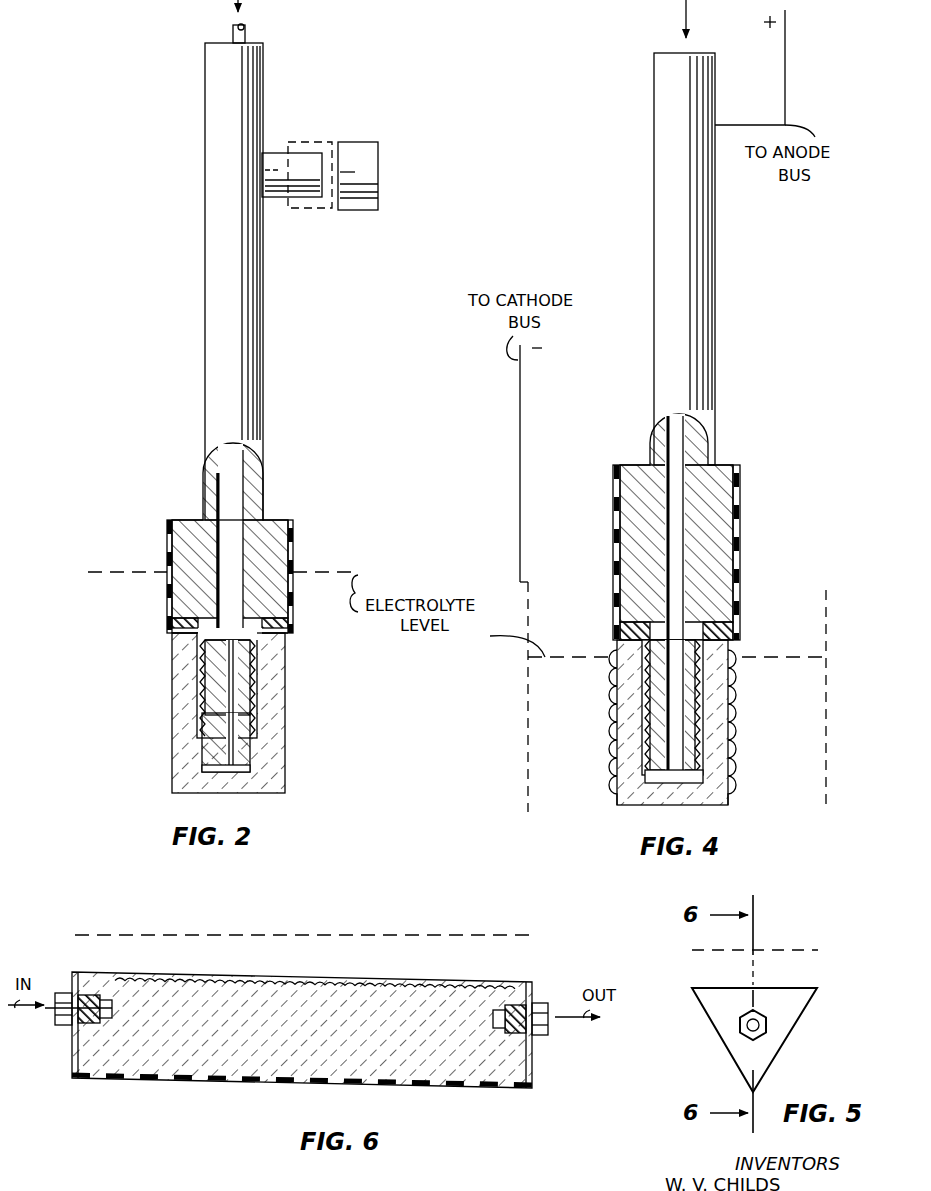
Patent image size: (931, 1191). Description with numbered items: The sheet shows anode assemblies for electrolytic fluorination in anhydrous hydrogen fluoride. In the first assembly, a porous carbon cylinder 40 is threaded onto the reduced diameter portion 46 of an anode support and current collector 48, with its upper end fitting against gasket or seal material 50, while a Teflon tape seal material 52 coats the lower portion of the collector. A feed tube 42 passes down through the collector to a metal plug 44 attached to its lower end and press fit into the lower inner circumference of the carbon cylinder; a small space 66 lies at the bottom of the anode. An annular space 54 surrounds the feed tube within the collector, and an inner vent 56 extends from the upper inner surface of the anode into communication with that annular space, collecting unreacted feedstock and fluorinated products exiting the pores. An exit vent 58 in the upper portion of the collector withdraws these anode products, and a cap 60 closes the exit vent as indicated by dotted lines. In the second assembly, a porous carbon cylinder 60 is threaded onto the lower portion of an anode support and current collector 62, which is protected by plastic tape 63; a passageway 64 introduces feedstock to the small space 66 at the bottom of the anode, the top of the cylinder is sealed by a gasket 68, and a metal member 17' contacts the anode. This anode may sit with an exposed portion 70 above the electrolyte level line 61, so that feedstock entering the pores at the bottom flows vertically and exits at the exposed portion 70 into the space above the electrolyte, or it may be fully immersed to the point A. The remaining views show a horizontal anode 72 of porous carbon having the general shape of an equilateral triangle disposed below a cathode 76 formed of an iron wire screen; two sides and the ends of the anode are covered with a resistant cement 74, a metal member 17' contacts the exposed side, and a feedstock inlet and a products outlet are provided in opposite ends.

In FIG. 2, the porous carbon cylinder 40 is at (285, 784).
In FIG. 2, the feed tube 42 is at (245, 30).
In FIG. 2, the metal plug 44 is at (205, 762).
In FIG. 2, the reduced diameter portion 46 is at (200, 705).
In FIG. 2, the anode support and current collector 48 is at (205, 280).
In FIG. 2, the gasket or seal material 50 is at (265, 616).
In FIG. 2, the Teflon tape seal material 52 is at (167, 553).
In FIG. 2, the annular space 54 is at (243, 485).
In FIG. 2, the inner vent 56 is at (212, 641).
In FIG. 2, the exit vent 58 is at (272, 197).
In FIG. 2, the cap / porous carbon cylinder 60 is at (378, 148).
In FIG. 4, the cap / porous carbon cylinder 60 is at (617, 704).
In FIG. 4, the cell wall line 61 is at (828, 656).
In FIG. 4, the anode support and current collector 62 is at (654, 236).
In FIG. 4, the plastic tape 63 is at (742, 527).
In FIG. 4, the passageway 64 is at (682, 452).
In FIG. 2, the small space 66 is at (238, 773).
In FIG. 4, the small space 66 is at (700, 781).
In FIG. 6, the small space 66 is at (112, 1000).
In FIG. 4, the gasket 68 is at (712, 623).
In FIG. 4, the exposed portion 70 is at (617, 655).
In FIG. 6, the horizontal anode 72 is at (400, 982).
In FIG. 5, the horizontal anode 72 is at (790, 988).
In FIG. 6, the resistant cement 74 is at (284, 1086).
In FIG. 6, the cathode 76 is at (330, 938).
In FIG. 5, the cathode 76 is at (797, 950).
In FIG. 4, the metal member 17' is at (756, 742).
In FIG. 6, the metal member 17' is at (315, 967).
In FIG. 4, the point A is at (750, 555).